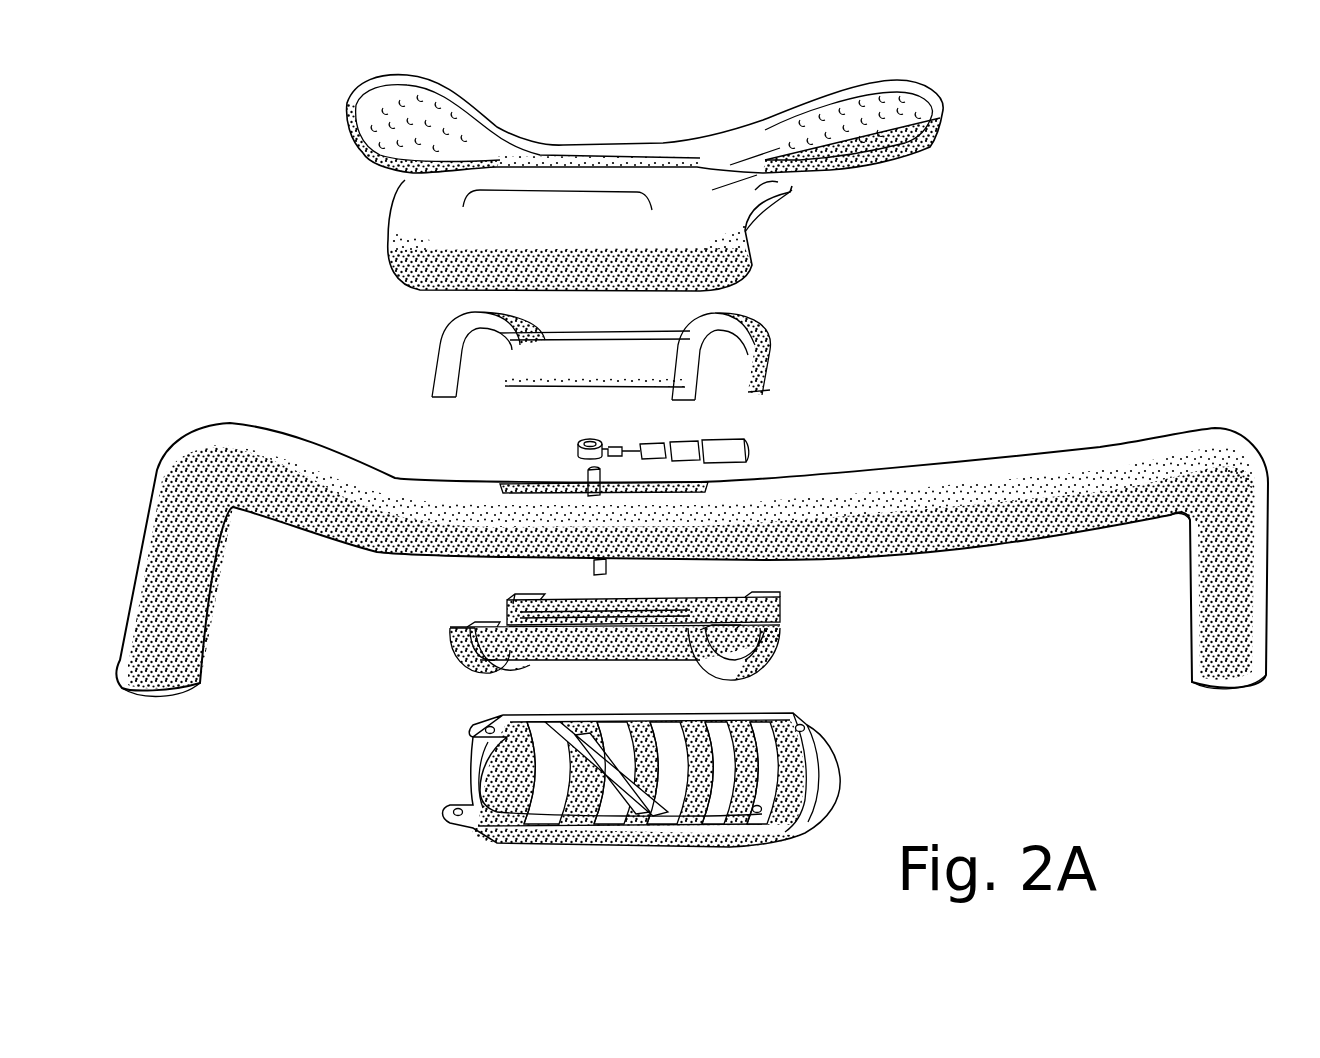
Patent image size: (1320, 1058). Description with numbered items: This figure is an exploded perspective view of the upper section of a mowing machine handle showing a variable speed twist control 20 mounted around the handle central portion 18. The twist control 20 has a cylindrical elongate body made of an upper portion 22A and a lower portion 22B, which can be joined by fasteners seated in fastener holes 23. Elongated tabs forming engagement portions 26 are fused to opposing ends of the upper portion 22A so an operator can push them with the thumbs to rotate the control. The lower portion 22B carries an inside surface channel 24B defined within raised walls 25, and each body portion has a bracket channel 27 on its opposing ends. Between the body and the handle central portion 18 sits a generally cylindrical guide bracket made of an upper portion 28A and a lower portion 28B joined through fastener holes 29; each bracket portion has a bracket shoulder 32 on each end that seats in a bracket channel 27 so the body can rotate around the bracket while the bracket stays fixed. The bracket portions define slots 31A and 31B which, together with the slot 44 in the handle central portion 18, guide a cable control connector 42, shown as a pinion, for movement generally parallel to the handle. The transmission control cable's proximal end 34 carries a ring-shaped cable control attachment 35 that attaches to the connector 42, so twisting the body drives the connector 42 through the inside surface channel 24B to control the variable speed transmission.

The handle central portion 18 is at (1127, 440).
The twist control 20 is at (1028, 112).
The upper portion of elongate body 22A is at (750, 245).
The lower portion of elongate body 22B is at (832, 775).
The fastener holes 23 is at (453, 811).
The inside surface channel 24B is at (605, 815).
The raised walls 25 is at (590, 790).
The engagement portions 26 is at (385, 105).
The bracket channel 27 is at (540, 797).
The upper portion of guide bracket 28A is at (587, 350).
The lower portion of guide bracket 28B is at (653, 654).
The fastener holes 29 is at (468, 628).
The slot 31A is at (630, 335).
The slot 31B is at (585, 645).
The bracket shoulder 32 is at (450, 337).
The proximal end 34 is at (745, 455).
The cable control attachment 35 is at (598, 440).
The cable control connector 42 is at (583, 470).
The slot 44 is at (680, 505).